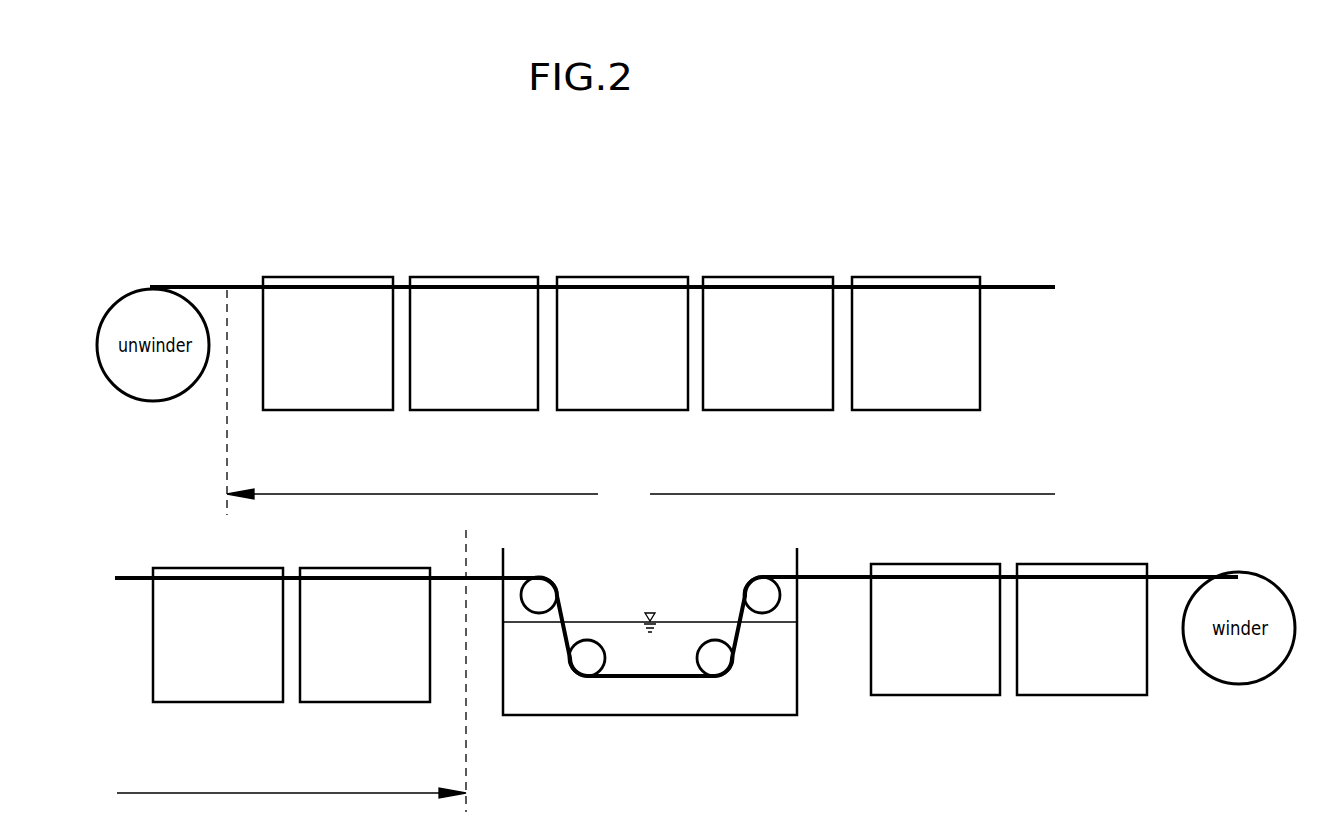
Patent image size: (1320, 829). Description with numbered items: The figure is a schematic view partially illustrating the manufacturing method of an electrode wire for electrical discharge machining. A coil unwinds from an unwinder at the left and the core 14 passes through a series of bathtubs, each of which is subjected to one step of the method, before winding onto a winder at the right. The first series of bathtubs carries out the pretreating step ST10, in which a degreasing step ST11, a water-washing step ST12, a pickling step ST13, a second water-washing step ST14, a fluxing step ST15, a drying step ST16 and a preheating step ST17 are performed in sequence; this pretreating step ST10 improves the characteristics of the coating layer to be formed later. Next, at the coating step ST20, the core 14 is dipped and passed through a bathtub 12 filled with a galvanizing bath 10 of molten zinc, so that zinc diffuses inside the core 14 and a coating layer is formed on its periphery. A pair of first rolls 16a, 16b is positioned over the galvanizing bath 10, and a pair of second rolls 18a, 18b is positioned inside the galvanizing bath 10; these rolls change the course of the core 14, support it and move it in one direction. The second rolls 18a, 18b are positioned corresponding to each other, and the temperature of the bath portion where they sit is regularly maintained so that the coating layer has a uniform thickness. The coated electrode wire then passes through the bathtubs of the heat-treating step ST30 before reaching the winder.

The galvanizing bath 10 is at (782, 708).
The bathtub 12 is at (800, 657).
The core 14 is at (514, 575).
The first roll 16a is at (545, 592).
The first roll 16b is at (756, 586).
The second roll 18a is at (583, 662).
The second roll 18b is at (721, 662).
The pretreating step ST10 is at (641, 492).
The degreasing step ST11 is at (328, 410).
The water-washing step ST12 is at (474, 410).
The pickling step ST13 is at (620, 410).
The water-washing step ST14 is at (768, 410).
The fluxing step ST15 is at (915, 410).
The drying step ST16 is at (218, 702).
The preheating step ST17 is at (365, 702).
The coating step ST20 is at (658, 715).
The heat-treating step ST30 is at (1110, 706).